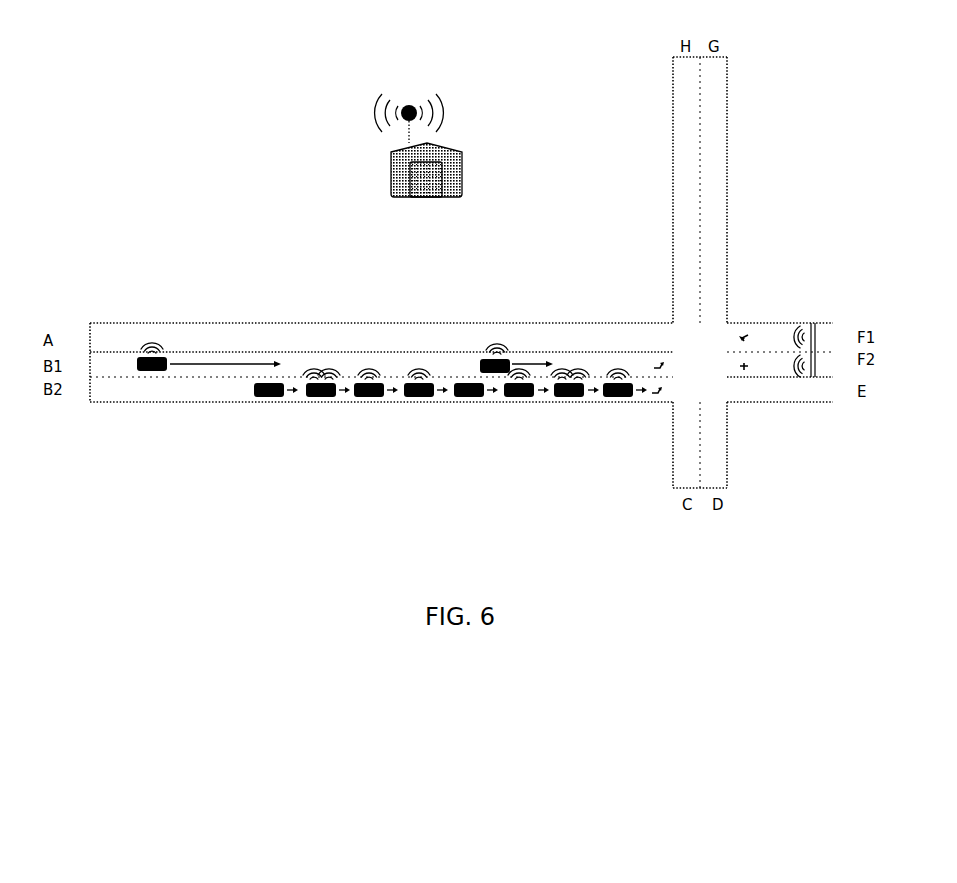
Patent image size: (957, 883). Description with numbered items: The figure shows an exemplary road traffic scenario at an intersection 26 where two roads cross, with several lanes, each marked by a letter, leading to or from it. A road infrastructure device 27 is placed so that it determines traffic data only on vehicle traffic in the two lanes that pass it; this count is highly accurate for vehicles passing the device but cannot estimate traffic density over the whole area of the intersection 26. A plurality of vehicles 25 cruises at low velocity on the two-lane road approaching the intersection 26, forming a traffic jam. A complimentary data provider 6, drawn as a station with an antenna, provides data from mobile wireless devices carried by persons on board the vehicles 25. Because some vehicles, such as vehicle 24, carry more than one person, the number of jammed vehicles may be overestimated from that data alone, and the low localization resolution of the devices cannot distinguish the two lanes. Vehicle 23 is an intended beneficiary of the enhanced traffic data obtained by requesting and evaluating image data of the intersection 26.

The complimentary data provider 6 is at (400, 197).
The vehicle 23 is at (155, 393).
The vehicle 24 is at (322, 396).
The vehicles 25 is at (514, 434).
The intersection 26 is at (775, 454).
The road infrastructure device 27 is at (806, 325).